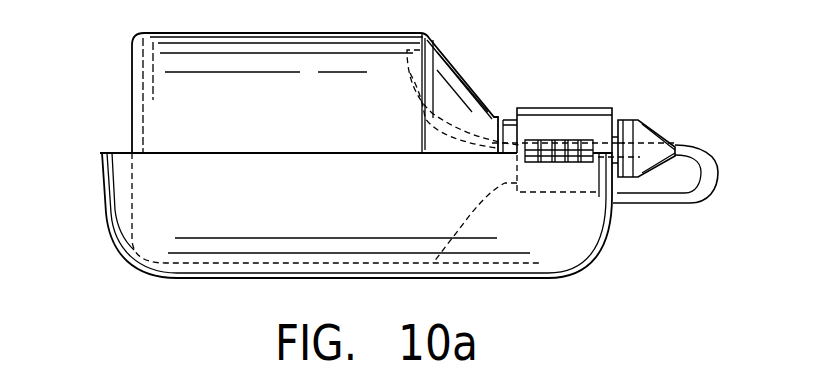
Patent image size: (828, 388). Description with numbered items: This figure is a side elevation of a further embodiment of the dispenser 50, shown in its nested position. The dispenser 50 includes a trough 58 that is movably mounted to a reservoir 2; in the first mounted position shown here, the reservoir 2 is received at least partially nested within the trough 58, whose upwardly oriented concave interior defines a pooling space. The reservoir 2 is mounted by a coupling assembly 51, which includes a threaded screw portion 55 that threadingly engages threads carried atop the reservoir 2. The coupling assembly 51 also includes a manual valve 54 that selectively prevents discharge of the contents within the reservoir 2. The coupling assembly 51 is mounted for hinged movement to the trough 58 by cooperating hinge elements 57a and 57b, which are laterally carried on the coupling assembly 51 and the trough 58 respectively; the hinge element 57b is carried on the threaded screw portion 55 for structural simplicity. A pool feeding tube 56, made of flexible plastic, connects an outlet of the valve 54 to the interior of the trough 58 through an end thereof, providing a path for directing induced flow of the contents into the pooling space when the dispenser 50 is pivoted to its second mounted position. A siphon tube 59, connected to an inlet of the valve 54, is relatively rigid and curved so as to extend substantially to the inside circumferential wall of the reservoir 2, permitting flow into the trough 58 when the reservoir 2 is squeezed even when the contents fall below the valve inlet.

The reservoir 2 is at (210, 33).
The dispenser 50 is at (522, 36).
The coupling assembly 51 is at (630, 79).
The valve 54 is at (655, 132).
The threaded screw portion 55 is at (577, 108).
The pool feeding tube 56 is at (707, 185).
The hinge element 57a is at (543, 162).
The hinge element 57b is at (553, 162).
The trough 58 is at (103, 199).
The siphon tube 59 is at (410, 73).